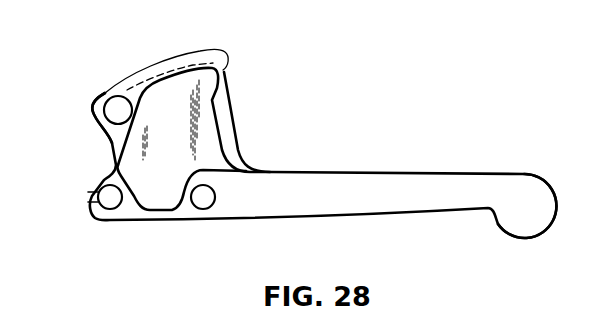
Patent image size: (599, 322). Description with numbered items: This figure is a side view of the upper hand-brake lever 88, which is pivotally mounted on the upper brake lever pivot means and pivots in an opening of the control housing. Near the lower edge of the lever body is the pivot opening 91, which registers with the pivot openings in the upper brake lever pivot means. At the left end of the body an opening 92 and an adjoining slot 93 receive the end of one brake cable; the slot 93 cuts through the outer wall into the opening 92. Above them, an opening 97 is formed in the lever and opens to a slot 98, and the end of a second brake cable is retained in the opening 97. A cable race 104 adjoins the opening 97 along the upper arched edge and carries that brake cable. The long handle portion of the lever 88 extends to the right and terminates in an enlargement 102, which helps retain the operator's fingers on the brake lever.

The upper hand-brake lever 88 is at (432, 172).
The pivot opening 91 is at (215, 197).
The opening 92 is at (108, 186).
The slot 93 is at (88, 197).
The opening 97 is at (122, 106).
The slot 98 is at (103, 95).
The enlargement 102 is at (513, 238).
The cable race 104 is at (190, 66).